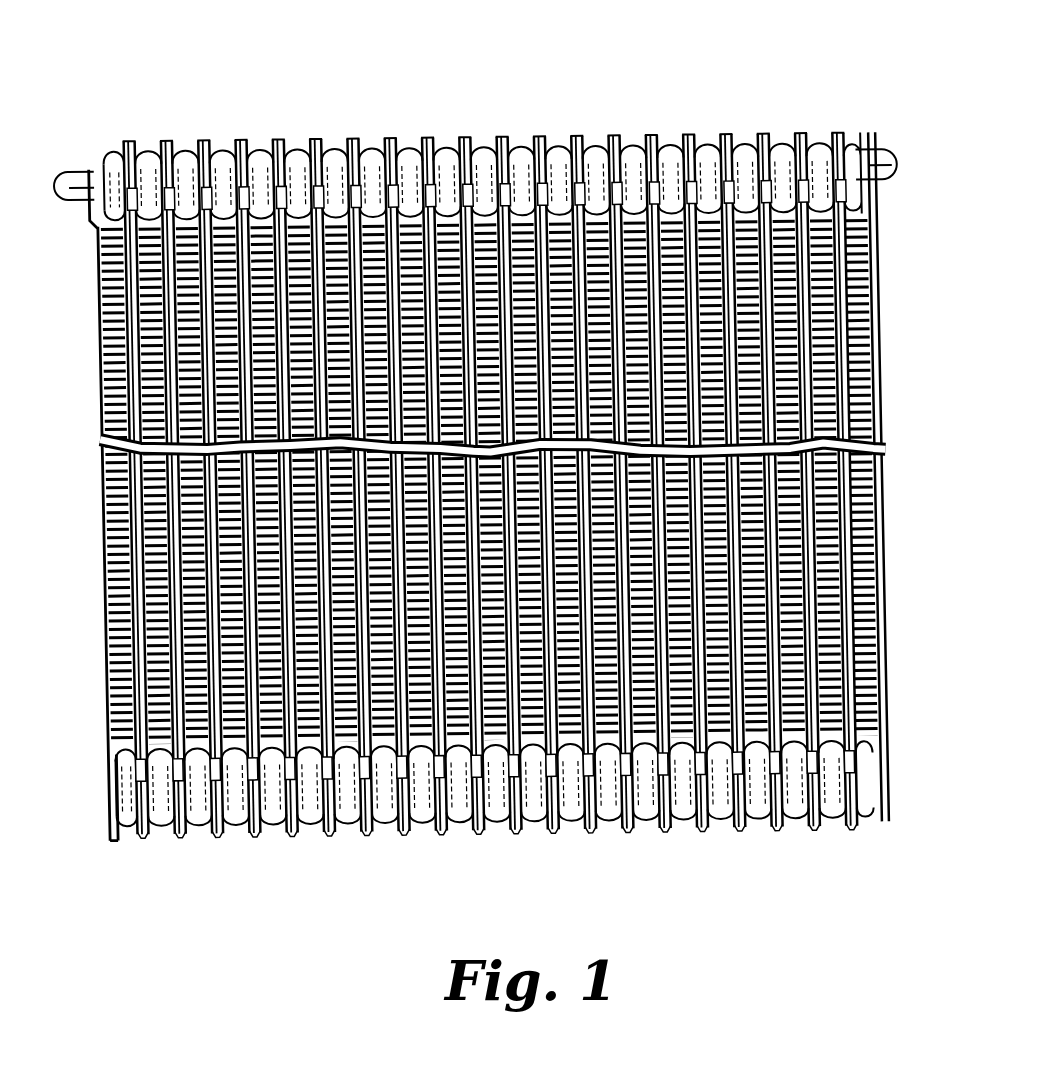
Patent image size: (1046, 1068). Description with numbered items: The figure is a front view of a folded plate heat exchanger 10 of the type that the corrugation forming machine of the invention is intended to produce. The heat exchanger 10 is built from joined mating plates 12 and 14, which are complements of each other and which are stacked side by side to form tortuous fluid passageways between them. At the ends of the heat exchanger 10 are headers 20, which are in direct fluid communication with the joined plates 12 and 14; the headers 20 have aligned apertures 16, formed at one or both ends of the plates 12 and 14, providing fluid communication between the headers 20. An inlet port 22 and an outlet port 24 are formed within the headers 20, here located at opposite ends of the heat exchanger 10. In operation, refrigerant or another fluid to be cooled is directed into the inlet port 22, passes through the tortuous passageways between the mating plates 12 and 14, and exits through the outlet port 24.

The heat exchanger 10 is at (101, 48).
The plate 12 is at (491, 486).
The plate 14 is at (508, 481).
The apertures 16 is at (488, 486).
The header 20 is at (486, 181).
The inlet port 22 is at (74, 186).
The outlet port 24 is at (876, 164).